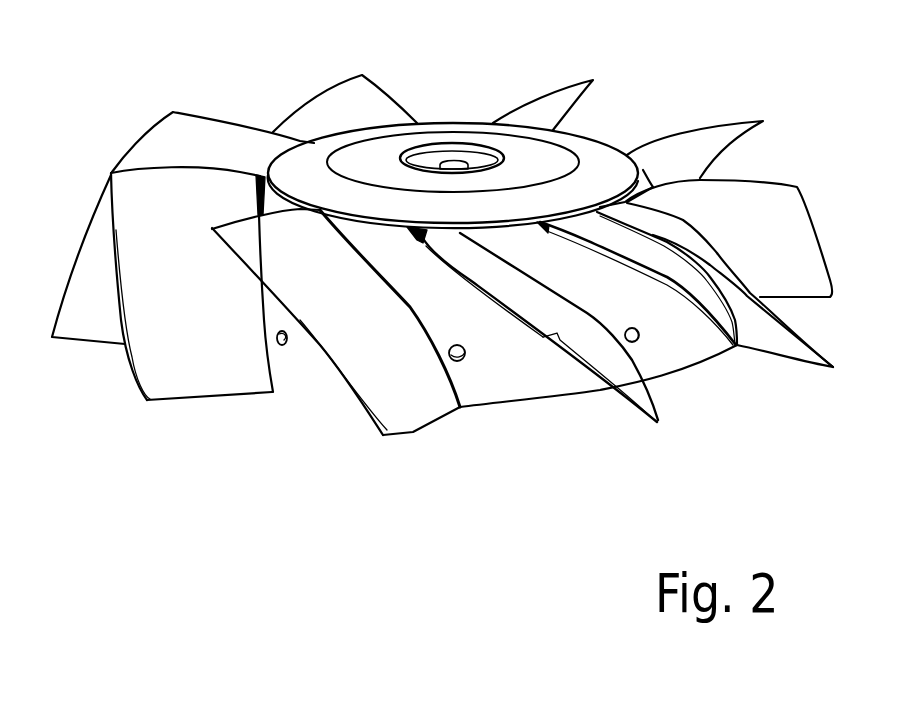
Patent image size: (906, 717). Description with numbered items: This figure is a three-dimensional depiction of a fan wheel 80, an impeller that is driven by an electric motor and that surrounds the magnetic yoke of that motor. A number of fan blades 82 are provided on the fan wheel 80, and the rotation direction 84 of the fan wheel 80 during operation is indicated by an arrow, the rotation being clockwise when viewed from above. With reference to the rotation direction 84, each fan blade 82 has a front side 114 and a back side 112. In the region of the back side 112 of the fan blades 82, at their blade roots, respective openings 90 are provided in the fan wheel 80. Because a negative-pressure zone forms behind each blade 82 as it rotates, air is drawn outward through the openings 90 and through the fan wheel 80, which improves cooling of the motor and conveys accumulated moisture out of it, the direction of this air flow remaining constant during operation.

The fan wheel 80 is at (520, 362).
The fan blades 82 is at (373, 107).
The rotation direction 84 is at (452, 208).
The openings 90 is at (285, 340).
The back side 112 is at (610, 357).
The front side 114 is at (788, 347).